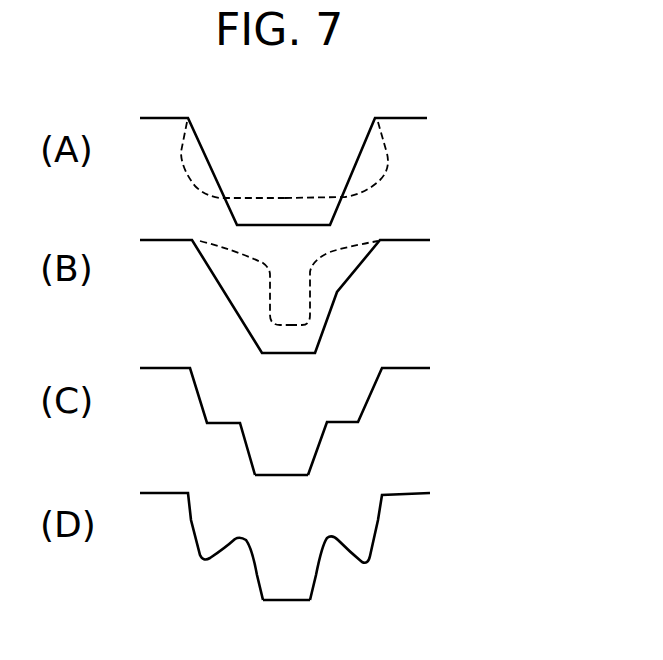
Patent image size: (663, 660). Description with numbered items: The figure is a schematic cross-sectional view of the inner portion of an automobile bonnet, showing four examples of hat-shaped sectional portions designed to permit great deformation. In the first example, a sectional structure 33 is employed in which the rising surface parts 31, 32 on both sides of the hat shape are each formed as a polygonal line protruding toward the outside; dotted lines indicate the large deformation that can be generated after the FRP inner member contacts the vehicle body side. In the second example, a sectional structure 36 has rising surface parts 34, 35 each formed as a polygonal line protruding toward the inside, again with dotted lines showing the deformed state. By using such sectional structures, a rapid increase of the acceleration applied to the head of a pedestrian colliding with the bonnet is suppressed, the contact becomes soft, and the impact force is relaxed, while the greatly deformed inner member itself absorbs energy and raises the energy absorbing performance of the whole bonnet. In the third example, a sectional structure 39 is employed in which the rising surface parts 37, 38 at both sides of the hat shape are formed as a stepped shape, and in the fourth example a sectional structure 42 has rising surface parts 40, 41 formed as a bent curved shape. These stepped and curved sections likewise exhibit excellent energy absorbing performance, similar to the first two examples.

The rising surface part 31 is at (178, 160).
The rising surface part 32 is at (383, 152).
The sectional structure 33 is at (421, 151).
The rising surface part 34 is at (216, 268).
The rising surface part 35 is at (351, 274).
The sectional structure 36 is at (412, 272).
The rising surface part 37 is at (198, 396).
The rising surface part 38 is at (366, 410).
The sectional structure 39 is at (412, 404).
The rising surface part 40 is at (193, 530).
The rising surface part 41 is at (379, 544).
The sectional structure 42 is at (425, 527).